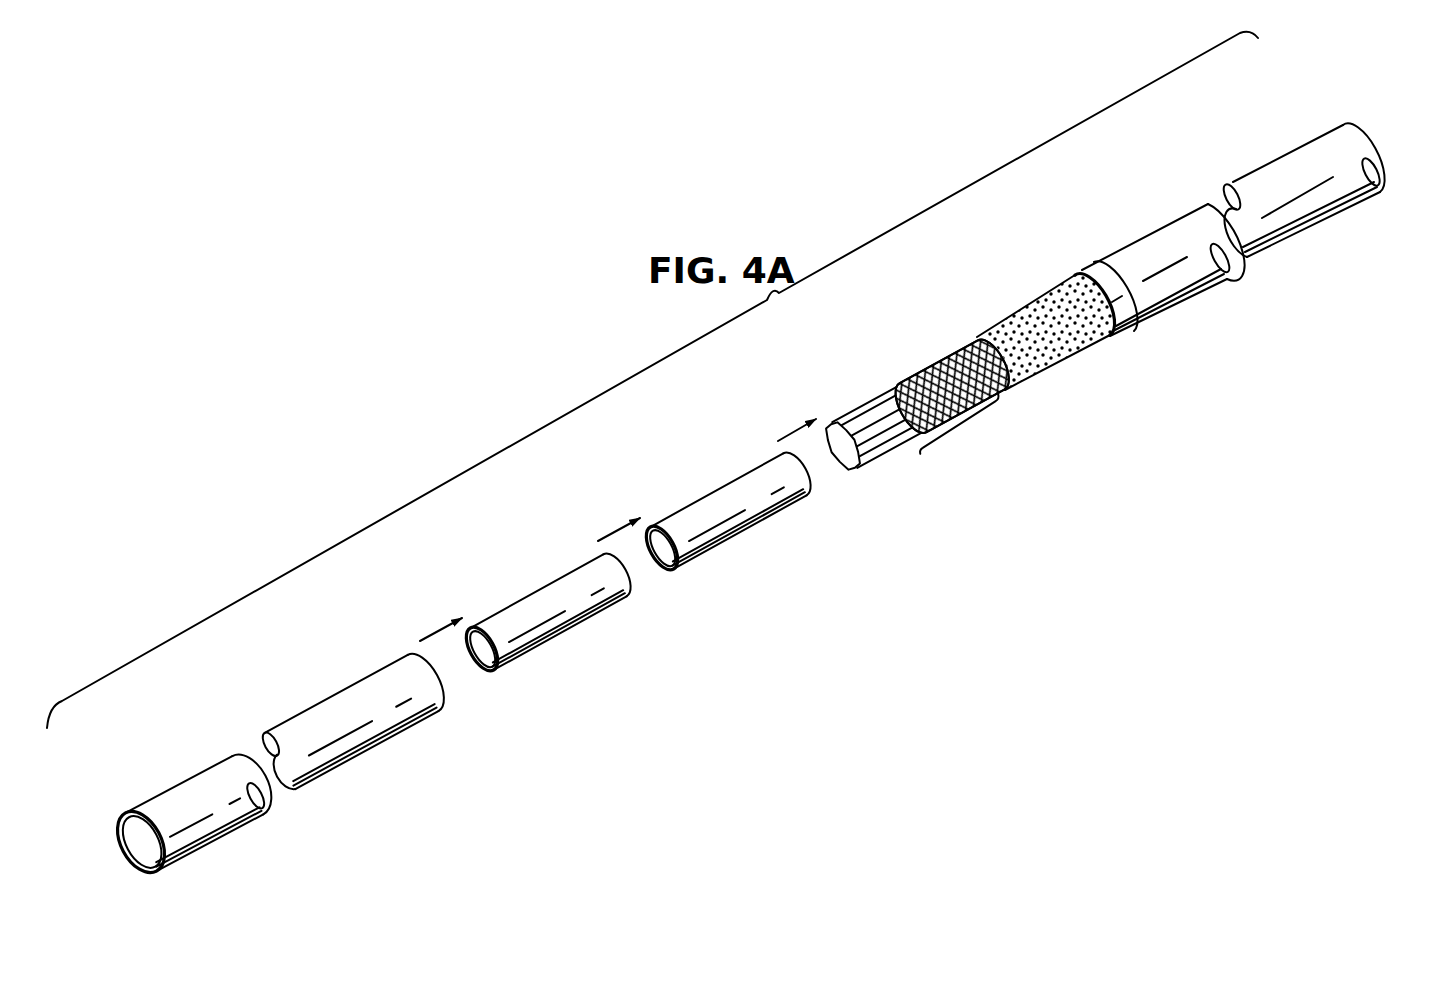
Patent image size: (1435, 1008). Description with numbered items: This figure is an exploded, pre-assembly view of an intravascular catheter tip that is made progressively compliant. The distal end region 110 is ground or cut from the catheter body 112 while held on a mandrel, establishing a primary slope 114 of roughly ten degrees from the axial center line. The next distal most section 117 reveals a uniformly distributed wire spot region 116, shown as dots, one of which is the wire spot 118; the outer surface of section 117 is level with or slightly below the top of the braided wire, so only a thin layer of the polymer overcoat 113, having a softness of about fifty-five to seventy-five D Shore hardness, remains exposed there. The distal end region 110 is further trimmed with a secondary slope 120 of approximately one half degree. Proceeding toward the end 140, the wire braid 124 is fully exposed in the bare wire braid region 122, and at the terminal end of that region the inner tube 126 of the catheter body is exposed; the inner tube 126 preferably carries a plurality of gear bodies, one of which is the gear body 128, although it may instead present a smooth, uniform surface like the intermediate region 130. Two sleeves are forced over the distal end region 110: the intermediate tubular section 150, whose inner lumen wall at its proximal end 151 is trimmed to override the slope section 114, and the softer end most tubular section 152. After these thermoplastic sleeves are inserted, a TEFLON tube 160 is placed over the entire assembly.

The distal end region 110 is at (676, 542).
The catheter body 112 is at (1181, 313).
The polymer overcoat 113 is at (1150, 320).
The primary slope 114 is at (1117, 333).
The wire spot region 116 is at (1031, 378).
The distal most section 117 is at (1036, 350).
The wire spot 118 is at (1044, 367).
The secondary slope 120 is at (1007, 391).
The bare wire braid region 122 is at (961, 428).
The wire braid 124 is at (905, 444).
The inner tube 126 is at (876, 462).
The gear body 128 is at (880, 456).
The intermediate region 130 is at (860, 423).
The end 140 is at (853, 468).
The intermediate tubular section 150 is at (717, 546).
The proximal end 151 is at (813, 494).
The end most tubular section 152 is at (583, 623).
The TEFLON tube 160 is at (320, 778).